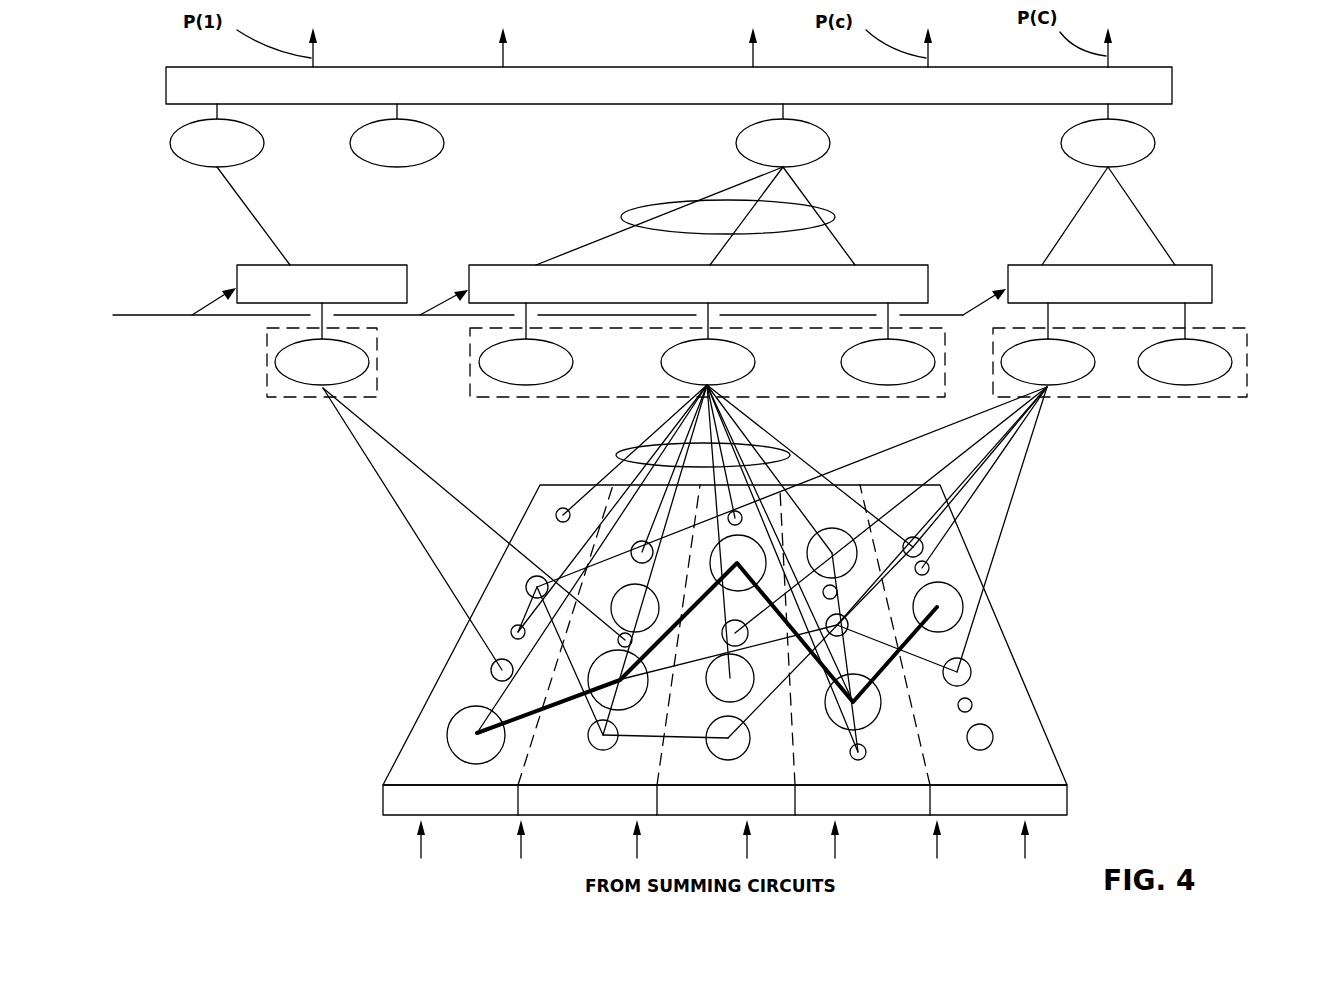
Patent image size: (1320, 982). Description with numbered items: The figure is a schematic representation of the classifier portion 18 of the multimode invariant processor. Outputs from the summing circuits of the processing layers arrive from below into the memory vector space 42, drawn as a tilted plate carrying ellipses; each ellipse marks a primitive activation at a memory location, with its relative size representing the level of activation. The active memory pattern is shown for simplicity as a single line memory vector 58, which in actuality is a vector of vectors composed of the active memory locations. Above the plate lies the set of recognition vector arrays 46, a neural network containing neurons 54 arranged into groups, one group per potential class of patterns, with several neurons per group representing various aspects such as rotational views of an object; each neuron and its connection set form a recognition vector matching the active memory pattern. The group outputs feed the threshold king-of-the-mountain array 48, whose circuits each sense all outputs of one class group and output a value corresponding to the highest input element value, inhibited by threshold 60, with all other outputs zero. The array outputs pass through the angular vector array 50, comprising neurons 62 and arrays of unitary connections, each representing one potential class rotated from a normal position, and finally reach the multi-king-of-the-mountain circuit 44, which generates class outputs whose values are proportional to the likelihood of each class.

The classifier portion 18 is at (246, 776).
The memory vector space 42 is at (712, 650).
The multi-king-of-the-mountain (MKOM) circuit 44 is at (669, 85).
The set of recognition vector arrays 46 is at (1248, 325).
The threshold king-of-the-mountain (TKOM) array 48 is at (655, 283).
The angular vector array 50 is at (1217, 108).
The neurons 54 is at (185, 328).
The memory vector 58 is at (520, 712).
The threshold 60 is at (133, 316).
The neurons 62 is at (626, 140).